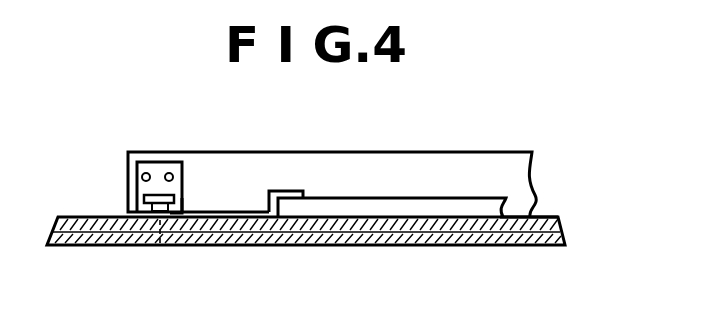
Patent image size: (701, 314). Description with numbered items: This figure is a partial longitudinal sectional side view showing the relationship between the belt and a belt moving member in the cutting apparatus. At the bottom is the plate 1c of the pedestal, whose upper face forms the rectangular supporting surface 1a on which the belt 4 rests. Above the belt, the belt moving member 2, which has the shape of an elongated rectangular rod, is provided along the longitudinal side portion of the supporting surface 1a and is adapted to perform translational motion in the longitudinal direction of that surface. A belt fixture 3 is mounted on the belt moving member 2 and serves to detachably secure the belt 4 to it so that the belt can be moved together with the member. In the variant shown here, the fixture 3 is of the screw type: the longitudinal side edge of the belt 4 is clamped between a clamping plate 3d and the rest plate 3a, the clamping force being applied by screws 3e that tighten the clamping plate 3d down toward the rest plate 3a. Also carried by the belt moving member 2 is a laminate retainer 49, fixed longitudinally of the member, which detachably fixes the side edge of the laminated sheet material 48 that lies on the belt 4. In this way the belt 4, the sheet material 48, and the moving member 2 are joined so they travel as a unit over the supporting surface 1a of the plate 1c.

The supporting surface 1a is at (565, 235).
The plate 1c is at (318, 240).
The belt moving member 2 is at (360, 172).
The belt fixture 3 is at (160, 166).
The rest plate 3a is at (160, 248).
The clamping plate 3d is at (184, 206).
The screws 3e is at (155, 197).
The belt 4 is at (545, 216).
The laminated sheet material 48 is at (436, 202).
The laminate retainer 49 is at (292, 190).